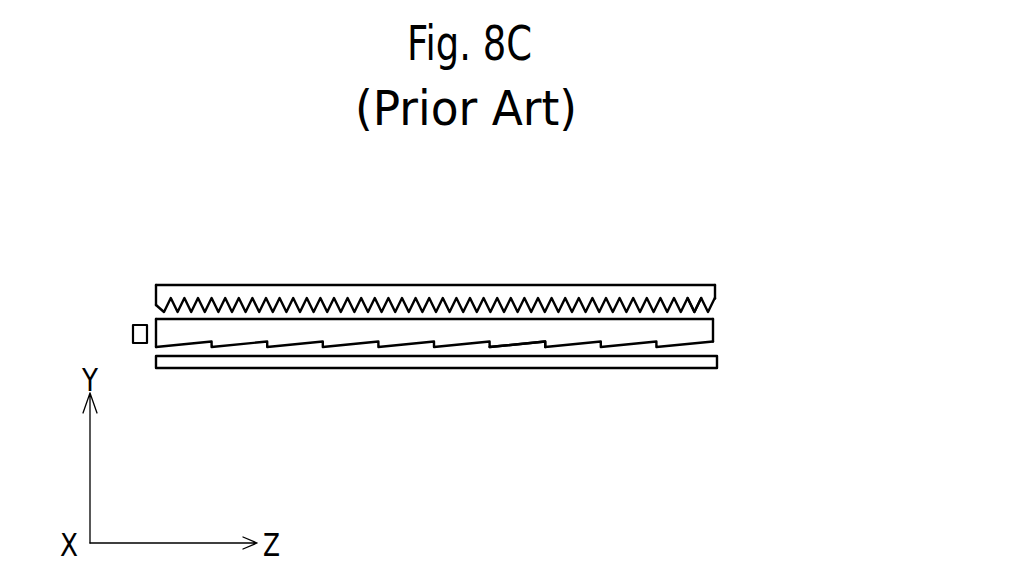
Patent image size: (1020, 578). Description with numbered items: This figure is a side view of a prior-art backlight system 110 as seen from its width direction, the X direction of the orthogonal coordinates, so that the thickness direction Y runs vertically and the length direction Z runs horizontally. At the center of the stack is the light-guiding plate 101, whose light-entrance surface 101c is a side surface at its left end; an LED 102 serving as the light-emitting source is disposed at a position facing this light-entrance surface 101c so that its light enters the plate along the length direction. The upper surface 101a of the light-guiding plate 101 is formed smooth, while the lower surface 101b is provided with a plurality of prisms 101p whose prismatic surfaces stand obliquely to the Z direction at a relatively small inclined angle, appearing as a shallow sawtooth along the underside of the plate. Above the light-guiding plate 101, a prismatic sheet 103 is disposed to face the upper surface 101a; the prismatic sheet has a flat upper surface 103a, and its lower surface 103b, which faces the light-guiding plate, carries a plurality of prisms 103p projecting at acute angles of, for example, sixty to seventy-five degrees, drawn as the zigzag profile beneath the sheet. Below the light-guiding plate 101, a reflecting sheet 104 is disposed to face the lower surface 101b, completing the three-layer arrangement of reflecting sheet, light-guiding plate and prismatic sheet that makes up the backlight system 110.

The backlight system 110 is at (327, 258).
The LED 102 is at (134, 324).
The prismatic sheet 103 is at (616, 294).
The upper surface of prismatic sheet 103a is at (457, 285).
The lower surface of prismatic sheet 103b is at (650, 297).
The prism of prismatic sheet 103p is at (700, 301).
The light-guiding plate 101 is at (697, 336).
The upper surface of light-guiding plate 101a is at (650, 320).
The lower surface of light-guiding plate 101b is at (545, 345).
The light-entrance surface 101c is at (154, 346).
The prism of light-guiding plate 101p is at (503, 345).
The reflecting sheet 104 is at (312, 369).